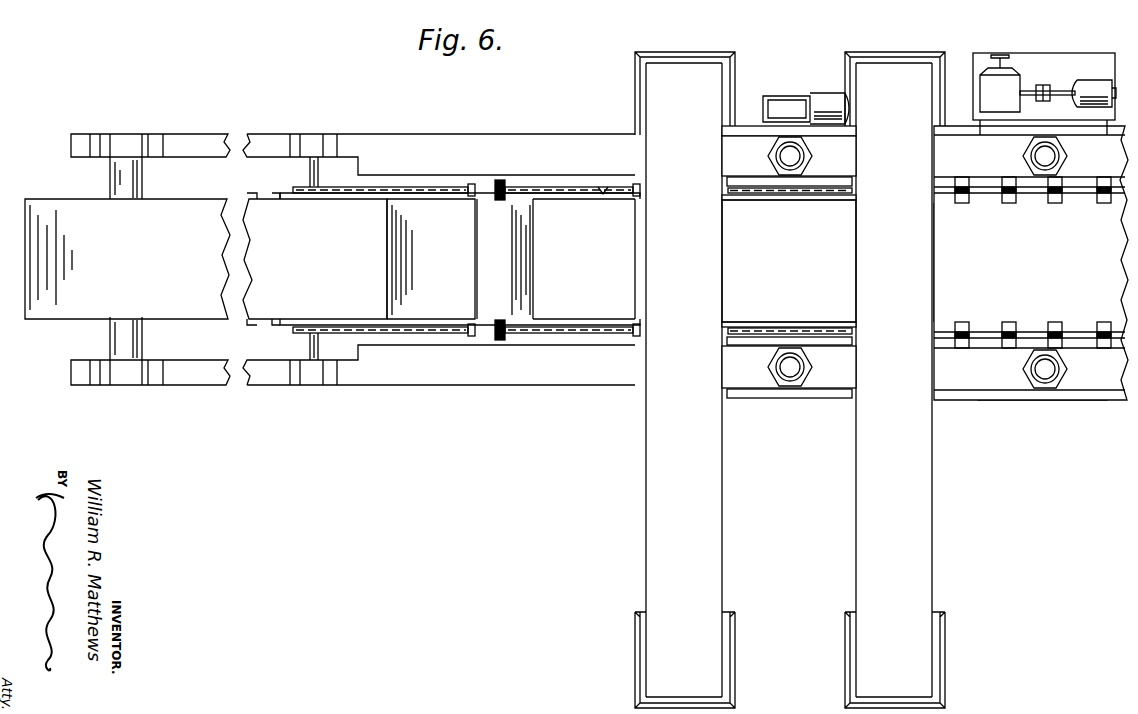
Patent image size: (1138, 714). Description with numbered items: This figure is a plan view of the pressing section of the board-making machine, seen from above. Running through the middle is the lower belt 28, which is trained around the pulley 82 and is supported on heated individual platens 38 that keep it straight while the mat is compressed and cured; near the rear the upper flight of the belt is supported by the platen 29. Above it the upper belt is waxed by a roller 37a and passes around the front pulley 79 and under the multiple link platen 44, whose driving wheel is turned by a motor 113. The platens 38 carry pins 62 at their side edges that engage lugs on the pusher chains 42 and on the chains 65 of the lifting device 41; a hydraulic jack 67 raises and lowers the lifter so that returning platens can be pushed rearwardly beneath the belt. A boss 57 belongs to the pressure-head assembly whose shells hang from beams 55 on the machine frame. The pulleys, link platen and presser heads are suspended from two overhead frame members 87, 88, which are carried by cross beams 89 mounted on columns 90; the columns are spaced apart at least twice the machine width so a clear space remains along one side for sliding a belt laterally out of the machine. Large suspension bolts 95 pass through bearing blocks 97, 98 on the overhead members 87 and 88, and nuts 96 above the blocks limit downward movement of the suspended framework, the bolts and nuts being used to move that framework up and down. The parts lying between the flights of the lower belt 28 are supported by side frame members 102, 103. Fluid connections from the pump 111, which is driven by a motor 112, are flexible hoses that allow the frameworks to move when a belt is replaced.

The lower belt 28 is at (135, 274).
The platen 29 is at (245, 325).
The roller 37a is at (530, 264).
The heated individual platens 38 is at (577, 200).
The lifting device 41 is at (312, 186).
The pusher chains 42 is at (776, 329).
The multiple link platen 44 is at (805, 200).
The beams 55 is at (1072, 205).
The boss 57 is at (446, 271).
The pins 62 is at (530, 186).
The chains 65 is at (432, 186).
The hydraulic jack 67 is at (604, 182).
The front pulley 79 is at (475, 328).
The pulley 82 is at (118, 191).
The overhead frame member 87 is at (482, 134).
The overhead frame member 88 is at (545, 375).
The cross beams 89 is at (656, 504).
The columns 90 is at (635, 88).
The suspension bolts 95 is at (785, 156).
The nuts 96 is at (806, 156).
The bearing block 97 is at (842, 181).
The bearing block 98 is at (848, 393).
The side frame member 102 is at (71, 375).
The side frame member 103 is at (71, 151).
The pump 111 is at (1012, 104).
The motor 112 is at (1085, 88).
The motor 113 is at (820, 96).